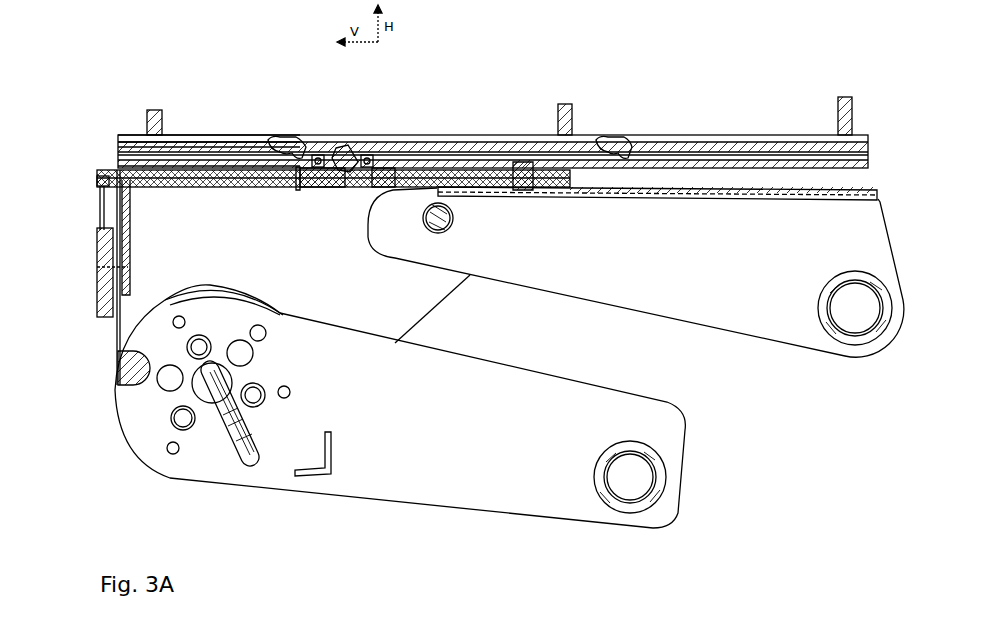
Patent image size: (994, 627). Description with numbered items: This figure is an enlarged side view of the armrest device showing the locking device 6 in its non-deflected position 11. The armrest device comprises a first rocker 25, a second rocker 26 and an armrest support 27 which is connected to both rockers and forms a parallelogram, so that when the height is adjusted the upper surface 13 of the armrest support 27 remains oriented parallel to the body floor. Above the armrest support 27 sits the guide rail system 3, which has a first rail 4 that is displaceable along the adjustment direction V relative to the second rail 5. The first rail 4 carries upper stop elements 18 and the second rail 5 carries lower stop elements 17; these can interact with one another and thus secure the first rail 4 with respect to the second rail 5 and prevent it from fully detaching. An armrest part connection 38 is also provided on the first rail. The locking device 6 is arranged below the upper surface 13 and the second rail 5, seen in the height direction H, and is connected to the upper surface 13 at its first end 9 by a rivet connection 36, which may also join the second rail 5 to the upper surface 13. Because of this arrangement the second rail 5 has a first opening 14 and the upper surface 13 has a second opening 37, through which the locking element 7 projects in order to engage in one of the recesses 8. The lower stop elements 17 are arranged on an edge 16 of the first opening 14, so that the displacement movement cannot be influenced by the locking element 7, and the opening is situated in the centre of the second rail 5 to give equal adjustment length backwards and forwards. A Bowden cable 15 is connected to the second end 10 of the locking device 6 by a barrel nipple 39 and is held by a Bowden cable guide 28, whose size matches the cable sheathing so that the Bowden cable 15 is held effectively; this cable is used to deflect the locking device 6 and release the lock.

The guide rail system 3 is at (851, 74).
The first rail 4 is at (118, 137).
The second rail 5 is at (118, 150).
The locking device 6 is at (76, 178).
The locking element 7 is at (344, 147).
The recess 8 is at (448, 148).
The first end of locking device 9 is at (535, 190).
The second end of locking device 10 is at (96, 182).
The non-deflected position 11 is at (644, 60).
The upper surface 13 is at (118, 166).
The first opening 14 is at (347, 194).
The edge of opening 16 is at (368, 172).
The Bowden cable 15 is at (97, 262).
The lower stop element 17 is at (318, 153).
The upper stop element 18 is at (290, 140).
The first rocker 25 is at (793, 335).
The second rocker 26 is at (415, 490).
The armrest support 27 is at (418, 305).
The Bowden cable guide 28 is at (97, 267).
The rivet connection 36 is at (518, 160).
The second opening 37 is at (296, 188).
The armrest part connection 38 is at (838, 112).
The barrel nipple 39 is at (104, 173).